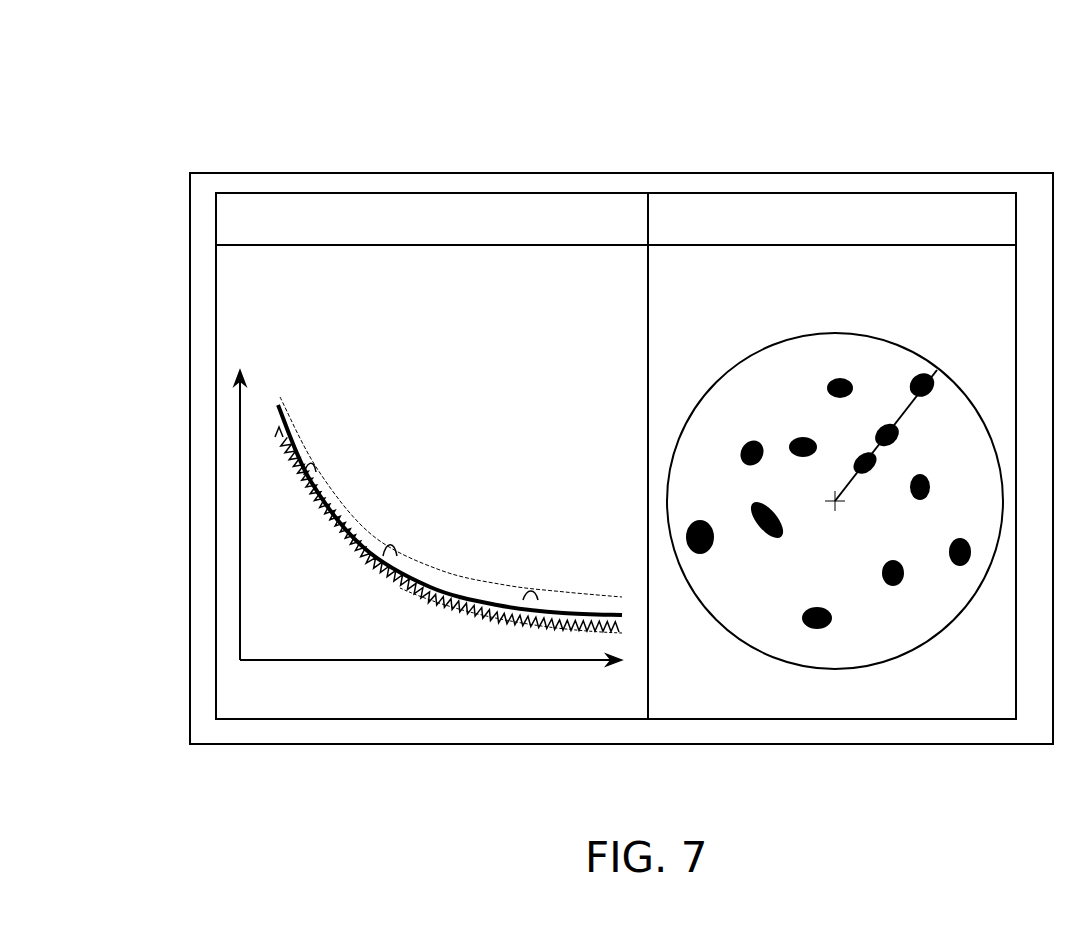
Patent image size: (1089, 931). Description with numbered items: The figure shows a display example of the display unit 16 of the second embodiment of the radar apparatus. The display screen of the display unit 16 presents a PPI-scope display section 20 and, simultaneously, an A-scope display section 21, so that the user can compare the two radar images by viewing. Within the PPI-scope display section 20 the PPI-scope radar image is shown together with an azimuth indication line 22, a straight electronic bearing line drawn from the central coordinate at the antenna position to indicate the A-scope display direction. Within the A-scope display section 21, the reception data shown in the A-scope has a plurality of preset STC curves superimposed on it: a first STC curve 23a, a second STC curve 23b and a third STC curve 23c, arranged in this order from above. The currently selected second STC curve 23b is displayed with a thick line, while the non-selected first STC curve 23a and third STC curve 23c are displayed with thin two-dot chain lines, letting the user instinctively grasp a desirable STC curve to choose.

The display unit 16 is at (225, 140).
The PPI-scope display section 20 is at (942, 678).
The A-scope display section 21 is at (373, 687).
The azimuth indication line 22 is at (888, 405).
The first STC curve 23a is at (457, 572).
The second STC curve 23b is at (587, 607).
The third STC curve 23c is at (597, 628).